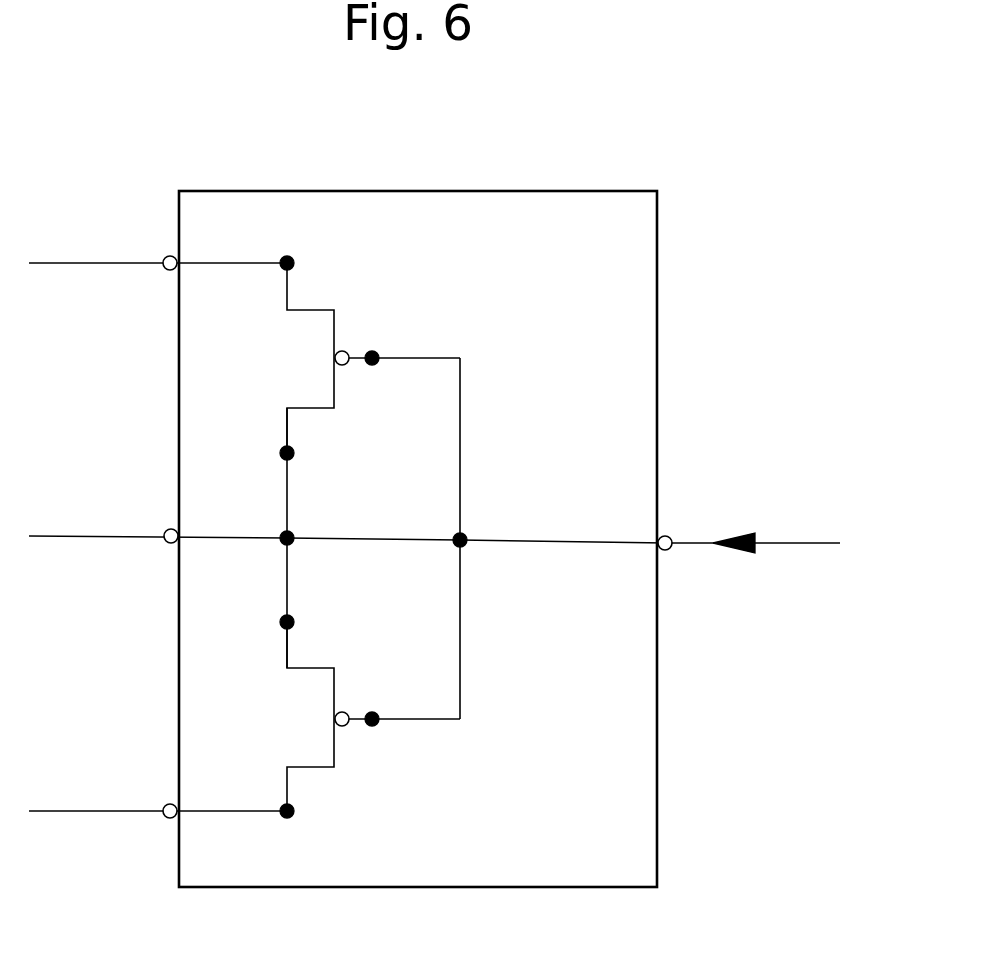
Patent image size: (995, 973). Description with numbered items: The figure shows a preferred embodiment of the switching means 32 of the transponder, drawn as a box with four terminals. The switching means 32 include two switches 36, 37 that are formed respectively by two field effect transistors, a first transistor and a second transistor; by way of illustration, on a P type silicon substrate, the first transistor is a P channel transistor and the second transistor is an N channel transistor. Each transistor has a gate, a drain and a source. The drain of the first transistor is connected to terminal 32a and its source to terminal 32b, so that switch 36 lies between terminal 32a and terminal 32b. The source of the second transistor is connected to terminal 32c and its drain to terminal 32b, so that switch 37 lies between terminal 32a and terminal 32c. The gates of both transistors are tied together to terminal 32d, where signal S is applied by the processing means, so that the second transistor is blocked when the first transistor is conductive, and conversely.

The switching means 32 is at (589, 222).
The terminal 32a is at (165, 258).
The terminal 32b is at (165, 531).
The terminal 32c is at (165, 806).
The terminal 32d is at (669, 536).
The switch 36 is at (398, 283).
The switch 37 is at (400, 780).